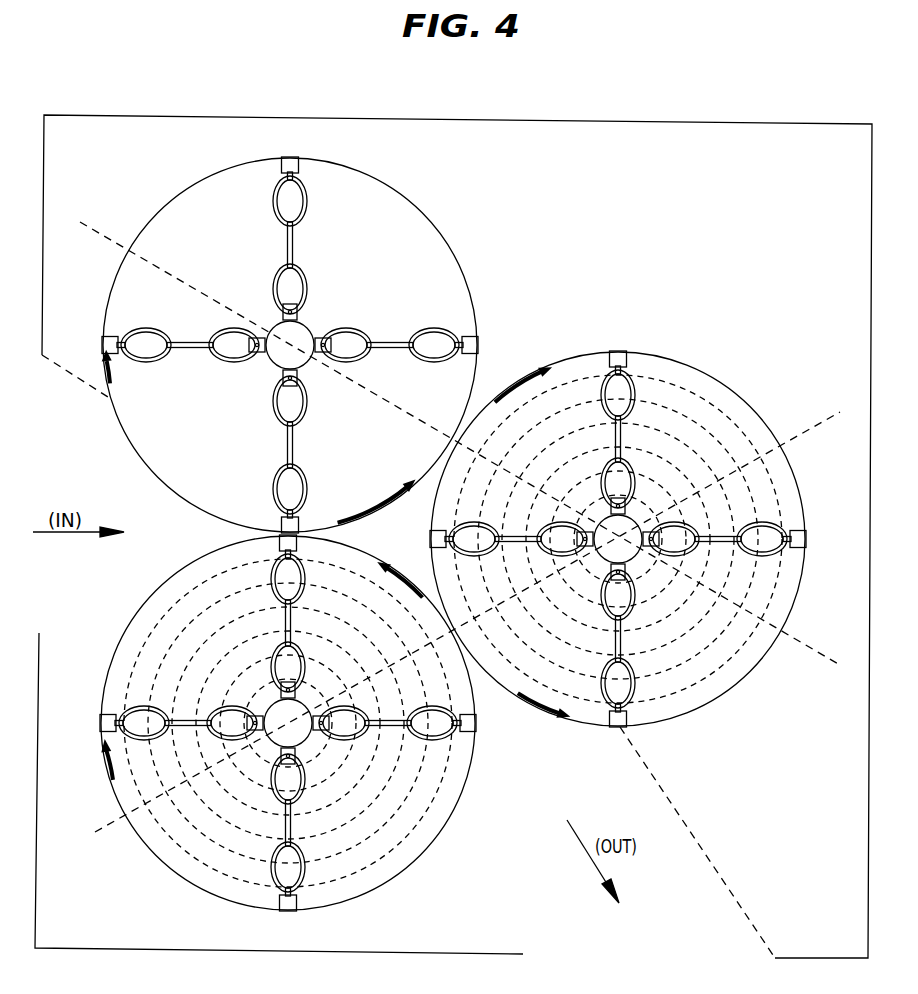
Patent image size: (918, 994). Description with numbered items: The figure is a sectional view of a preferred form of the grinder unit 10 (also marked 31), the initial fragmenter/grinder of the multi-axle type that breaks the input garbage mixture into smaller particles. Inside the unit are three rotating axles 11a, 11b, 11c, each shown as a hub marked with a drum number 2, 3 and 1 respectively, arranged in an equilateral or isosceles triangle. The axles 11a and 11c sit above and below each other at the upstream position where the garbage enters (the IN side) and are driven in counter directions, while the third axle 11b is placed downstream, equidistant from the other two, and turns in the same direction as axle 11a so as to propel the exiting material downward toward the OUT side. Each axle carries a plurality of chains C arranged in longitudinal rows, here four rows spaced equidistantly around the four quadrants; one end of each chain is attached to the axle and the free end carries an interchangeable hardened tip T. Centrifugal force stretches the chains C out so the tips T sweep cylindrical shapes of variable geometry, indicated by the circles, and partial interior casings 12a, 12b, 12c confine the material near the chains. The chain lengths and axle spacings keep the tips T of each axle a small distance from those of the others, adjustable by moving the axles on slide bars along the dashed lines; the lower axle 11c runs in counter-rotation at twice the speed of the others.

The grinder unit 10 is at (453, 513).
The casing 31 is at (603, 122).
The partial interior casing 12a is at (440, 230).
The partial interior casing 12b is at (767, 398).
The partial interior casing 12c is at (390, 883).
The rotating axle 11a is at (327, 321).
The rotating axle 11b is at (646, 499).
The rotating axle 11c is at (329, 750).
The chain C is at (300, 165).
The hardened tip T is at (277, 193).
The rotor 1 is at (280, 732).
The rotor 2 is at (282, 354).
The rotor 3 is at (610, 548).